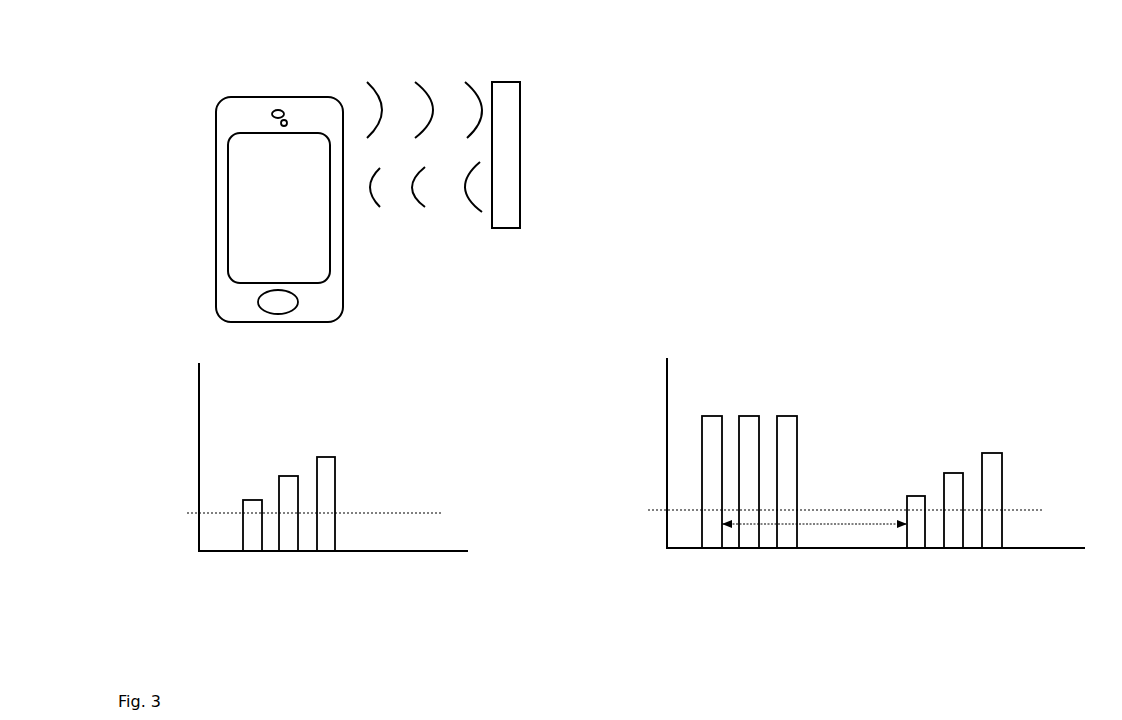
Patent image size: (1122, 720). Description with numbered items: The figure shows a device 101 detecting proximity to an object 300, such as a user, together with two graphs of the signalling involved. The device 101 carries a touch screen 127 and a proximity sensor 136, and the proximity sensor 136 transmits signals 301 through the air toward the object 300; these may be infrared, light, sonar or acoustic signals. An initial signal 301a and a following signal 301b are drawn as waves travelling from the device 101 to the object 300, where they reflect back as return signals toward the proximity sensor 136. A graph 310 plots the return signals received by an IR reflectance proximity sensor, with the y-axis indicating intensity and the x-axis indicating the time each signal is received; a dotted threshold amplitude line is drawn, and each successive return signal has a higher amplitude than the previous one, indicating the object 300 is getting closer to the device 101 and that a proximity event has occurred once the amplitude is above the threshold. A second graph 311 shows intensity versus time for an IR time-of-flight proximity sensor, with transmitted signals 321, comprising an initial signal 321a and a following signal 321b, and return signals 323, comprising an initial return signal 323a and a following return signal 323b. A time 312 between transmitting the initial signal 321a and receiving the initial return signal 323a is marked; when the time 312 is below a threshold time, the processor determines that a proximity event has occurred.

The device 101 is at (215, 157).
The touch screen 127 is at (292, 216).
The proximity sensor 136 is at (272, 117).
The object 300 is at (520, 157).
The signals 301 is at (451, 70).
The initial signal 301a is at (465, 83).
The transmitted signal 301b is at (423, 88).
The graph 310 is at (243, 555).
The graph 311 is at (702, 554).
The time 312 is at (830, 534).
The transmitted signals 321 is at (759, 450).
The initial signal 321a is at (707, 415).
The transmitted signal 321b is at (744, 415).
The return signals 323 is at (952, 458).
The initial return signal 323a is at (916, 495).
The return signal 323b is at (955, 472).